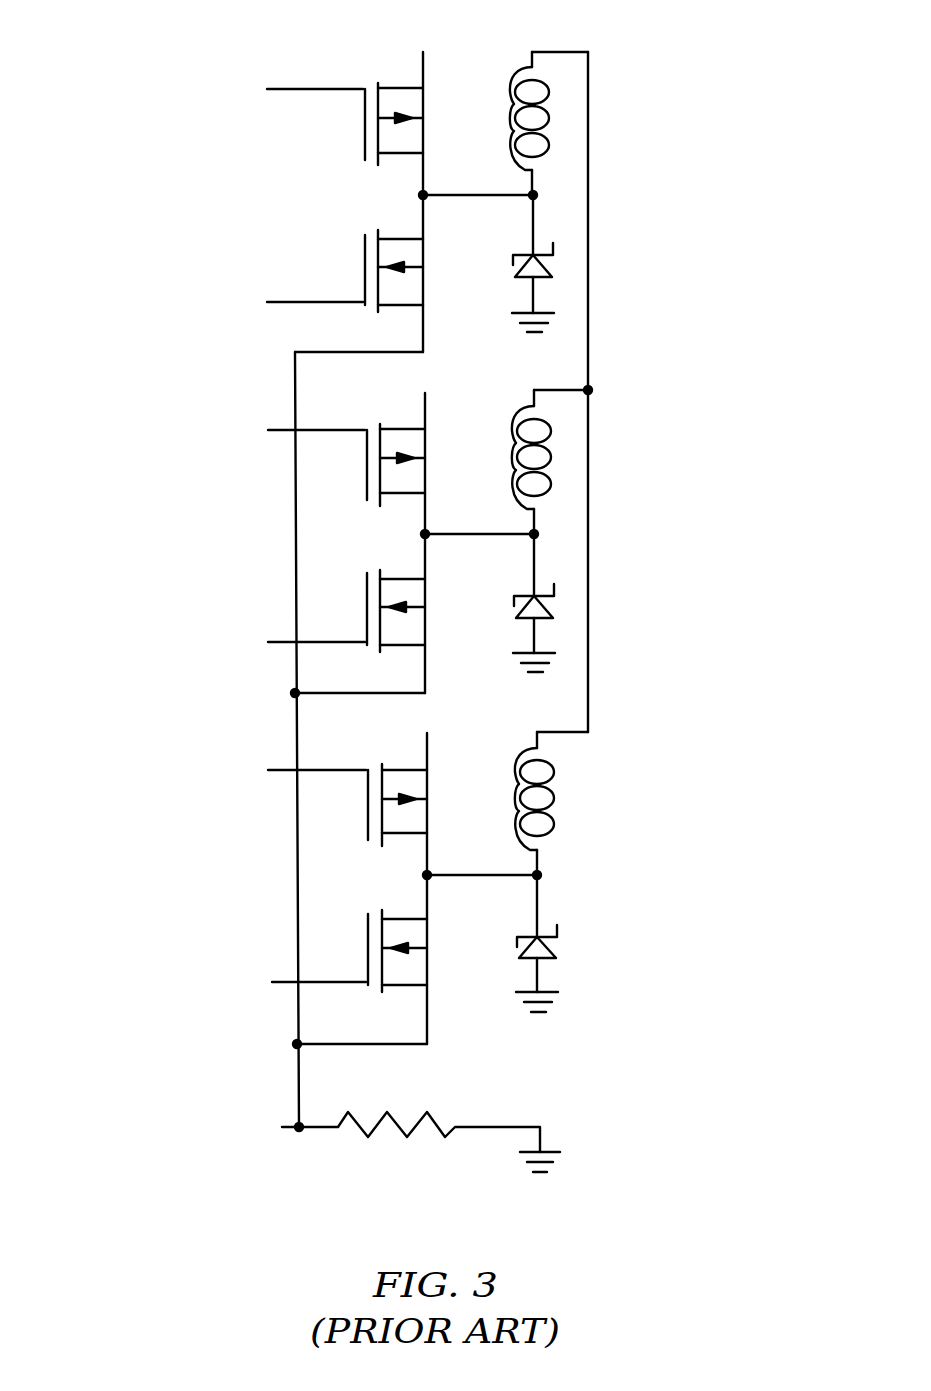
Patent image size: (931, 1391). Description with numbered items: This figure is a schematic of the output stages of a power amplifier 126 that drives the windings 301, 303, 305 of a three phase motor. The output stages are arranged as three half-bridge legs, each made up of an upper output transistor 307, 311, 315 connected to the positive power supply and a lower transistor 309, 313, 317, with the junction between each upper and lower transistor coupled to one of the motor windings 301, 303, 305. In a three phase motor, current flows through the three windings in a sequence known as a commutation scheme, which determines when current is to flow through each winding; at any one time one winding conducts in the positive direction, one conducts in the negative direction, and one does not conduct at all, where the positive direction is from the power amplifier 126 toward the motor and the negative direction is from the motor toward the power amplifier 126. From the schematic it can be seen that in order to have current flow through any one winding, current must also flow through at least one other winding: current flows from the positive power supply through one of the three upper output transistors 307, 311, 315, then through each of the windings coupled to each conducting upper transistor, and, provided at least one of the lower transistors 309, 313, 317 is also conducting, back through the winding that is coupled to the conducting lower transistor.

The power amplifier 126 is at (178, 156).
The winding 301 is at (518, 78).
The winding 303 is at (519, 418).
The winding 305 is at (521, 758).
The upper output transistor 307 is at (397, 87).
The lower transistor 309 is at (398, 307).
The upper output transistor 311 is at (407, 428).
The lower transistor 313 is at (403, 648).
The upper output transistor 315 is at (408, 768).
The lower transistor 317 is at (408, 988).